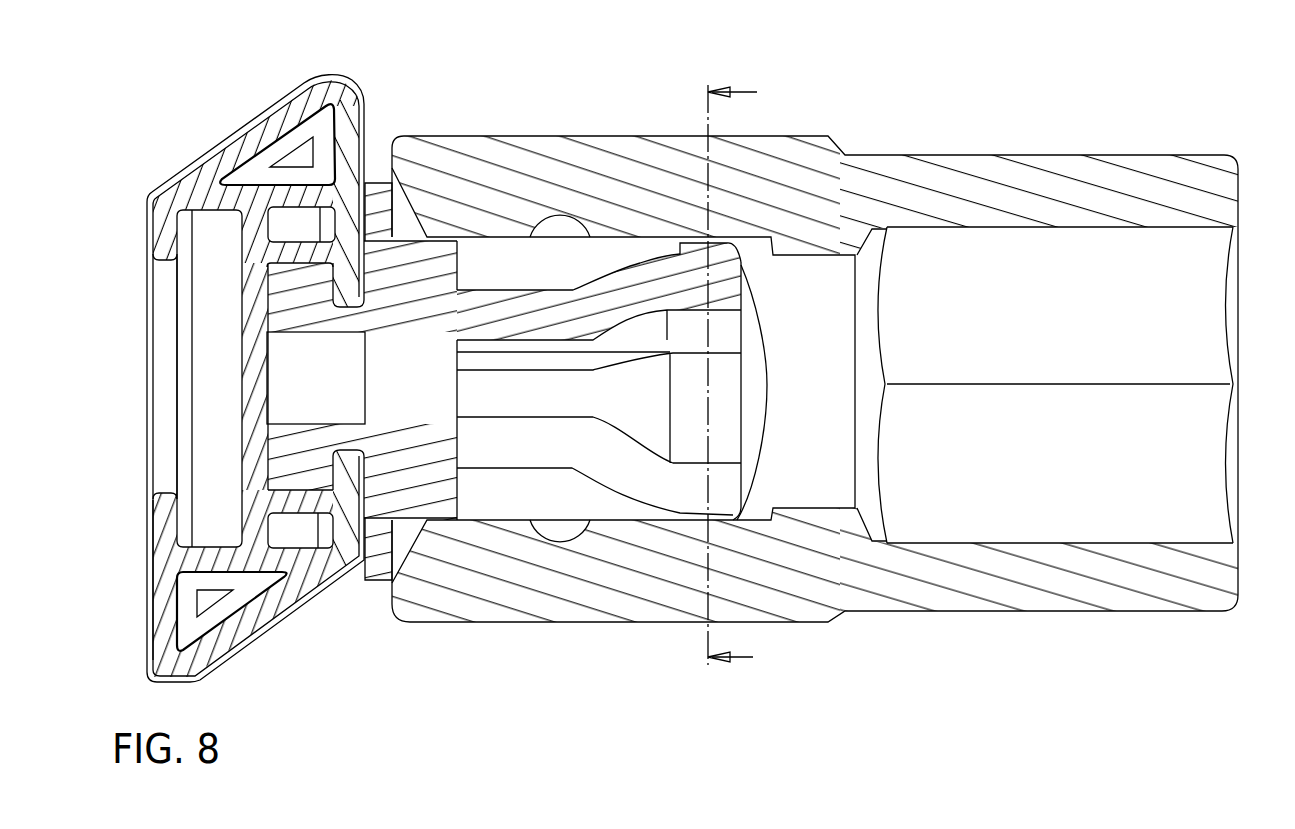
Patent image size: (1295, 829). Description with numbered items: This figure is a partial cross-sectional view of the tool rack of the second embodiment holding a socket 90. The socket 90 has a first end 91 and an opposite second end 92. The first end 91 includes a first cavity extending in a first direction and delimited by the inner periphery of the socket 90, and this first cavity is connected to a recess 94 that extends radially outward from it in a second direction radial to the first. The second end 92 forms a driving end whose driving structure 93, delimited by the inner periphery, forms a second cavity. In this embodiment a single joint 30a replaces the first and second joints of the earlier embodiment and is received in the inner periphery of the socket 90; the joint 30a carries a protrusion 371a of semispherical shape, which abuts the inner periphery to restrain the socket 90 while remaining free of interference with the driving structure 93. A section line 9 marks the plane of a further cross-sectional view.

The socket 90 is at (1052, 154).
The first end 91 is at (392, 134).
The second end 92 is at (1238, 180).
The driving structure 93 is at (1142, 243).
The recess 94 is at (568, 520).
The joint 30a is at (566, 250).
The protrusion 371a is at (700, 252).
The section line 9- 9 is at (732, 377).